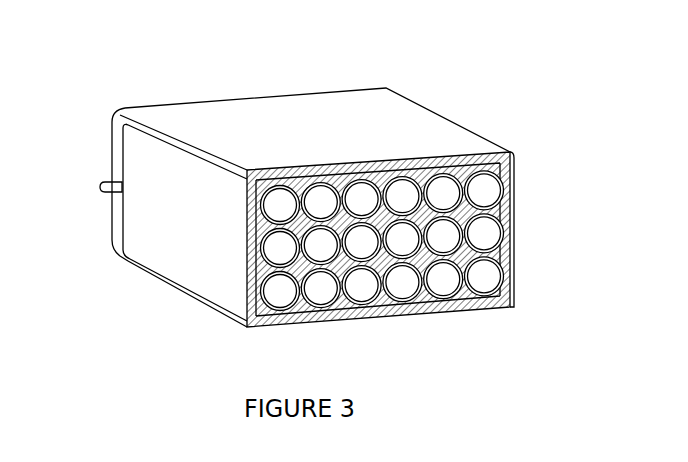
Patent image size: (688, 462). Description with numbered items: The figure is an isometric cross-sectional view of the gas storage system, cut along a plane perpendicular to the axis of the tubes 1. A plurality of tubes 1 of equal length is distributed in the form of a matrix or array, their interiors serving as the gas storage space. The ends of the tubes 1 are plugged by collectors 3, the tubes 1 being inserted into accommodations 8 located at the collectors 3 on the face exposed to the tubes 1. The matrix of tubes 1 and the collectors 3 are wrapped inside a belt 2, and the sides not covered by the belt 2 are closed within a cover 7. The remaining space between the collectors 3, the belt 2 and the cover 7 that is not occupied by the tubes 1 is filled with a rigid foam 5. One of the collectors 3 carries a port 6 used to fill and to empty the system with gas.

The tubes 1 is at (513, 292).
The belt 2 is at (411, 123).
The collectors 3 is at (112, 137).
The rigid foam 5 is at (514, 220).
The port 6 is at (110, 200).
The cover 7 is at (213, 270).
The accommodations 8 is at (107, 188).